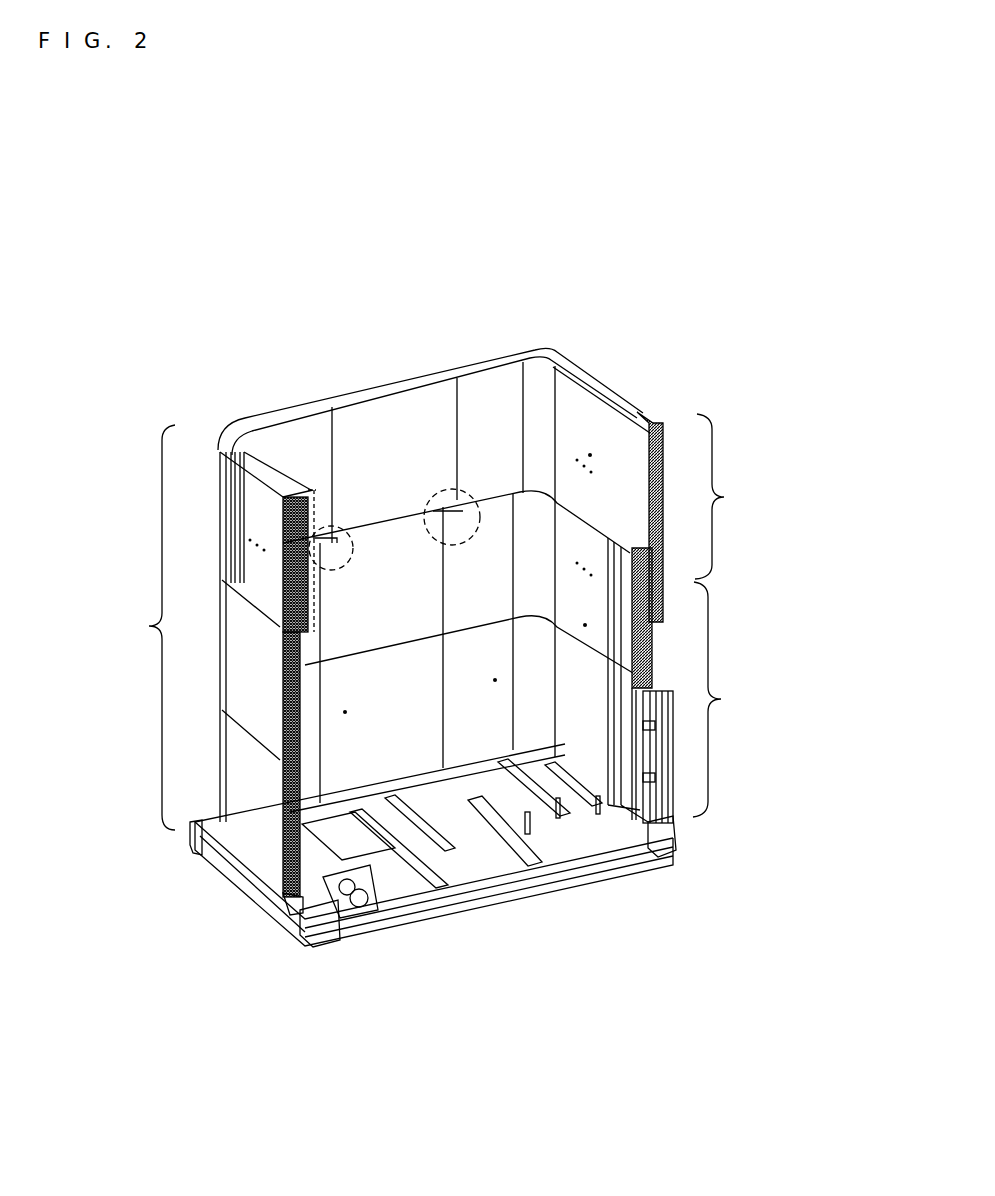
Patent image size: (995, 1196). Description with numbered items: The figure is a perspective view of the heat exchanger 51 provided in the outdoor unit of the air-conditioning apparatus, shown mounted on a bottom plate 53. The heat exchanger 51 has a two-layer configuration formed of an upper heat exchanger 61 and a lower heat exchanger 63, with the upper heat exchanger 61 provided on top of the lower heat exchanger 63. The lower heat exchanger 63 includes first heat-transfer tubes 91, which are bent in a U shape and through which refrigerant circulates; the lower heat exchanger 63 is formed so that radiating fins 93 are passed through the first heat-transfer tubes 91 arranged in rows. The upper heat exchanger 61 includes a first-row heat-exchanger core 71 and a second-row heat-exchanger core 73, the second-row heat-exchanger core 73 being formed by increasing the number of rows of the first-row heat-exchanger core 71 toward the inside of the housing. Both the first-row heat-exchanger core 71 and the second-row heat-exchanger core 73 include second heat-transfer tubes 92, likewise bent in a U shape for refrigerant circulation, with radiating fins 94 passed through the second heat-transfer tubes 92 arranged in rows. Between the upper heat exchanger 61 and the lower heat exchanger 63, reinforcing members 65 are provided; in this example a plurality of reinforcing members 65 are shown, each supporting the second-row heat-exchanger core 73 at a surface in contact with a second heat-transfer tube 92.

The heat exchanger 51 is at (144, 627).
The bottom plate 53 is at (466, 866).
The upper heat exchanger 61 is at (728, 497).
The lower heat exchanger 63 is at (727, 700).
The reinforcing member 65 is at (353, 563).
The first-row heat-exchanger core 71 is at (280, 537).
The second-row heat-exchanger core 73 is at (337, 503).
The first heat-transfer tubes 91 is at (658, 565).
The second heat-transfer tubes 92 is at (667, 482).
The radiating fins 93 is at (603, 533).
The radiating fins 94 is at (215, 460).